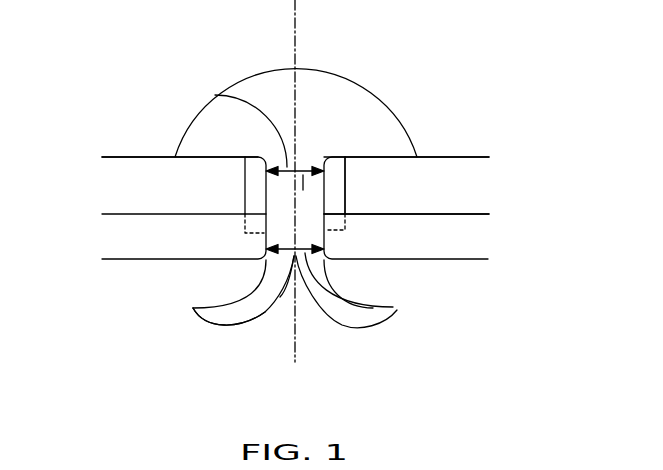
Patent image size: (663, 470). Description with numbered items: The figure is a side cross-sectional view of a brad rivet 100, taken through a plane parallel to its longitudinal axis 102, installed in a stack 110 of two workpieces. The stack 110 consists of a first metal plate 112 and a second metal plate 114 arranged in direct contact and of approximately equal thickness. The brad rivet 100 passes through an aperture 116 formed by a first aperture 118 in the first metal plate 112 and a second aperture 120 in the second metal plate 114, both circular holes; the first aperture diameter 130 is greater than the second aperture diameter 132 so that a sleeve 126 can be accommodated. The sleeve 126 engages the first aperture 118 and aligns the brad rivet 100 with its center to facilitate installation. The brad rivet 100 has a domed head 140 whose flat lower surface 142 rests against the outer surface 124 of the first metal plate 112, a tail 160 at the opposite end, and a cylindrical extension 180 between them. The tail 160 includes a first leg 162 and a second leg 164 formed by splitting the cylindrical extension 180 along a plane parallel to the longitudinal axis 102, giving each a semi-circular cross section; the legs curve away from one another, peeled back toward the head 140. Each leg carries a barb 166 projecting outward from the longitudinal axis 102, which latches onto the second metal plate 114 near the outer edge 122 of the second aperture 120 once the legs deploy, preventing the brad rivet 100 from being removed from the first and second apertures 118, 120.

The brad rivet 100 is at (125, 42).
The longitudinal axis 102 is at (294, 42).
The stack 110 is at (88, 212).
The first metal plate 112 is at (477, 173).
The second metal plate 114 is at (477, 243).
The aperture 116 is at (263, 195).
The first aperture 118 is at (347, 177).
The second aperture 120 is at (327, 242).
The outer edge 122 is at (263, 263).
The outer surface 124 is at (460, 157).
The sleeve 126 is at (333, 185).
The first aperture diameter 130 is at (215, 93).
The second aperture diameter 132 is at (342, 326).
The head 140 is at (250, 70).
The flat lower surface 142 is at (205, 160).
The tail 160 is at (237, 357).
The first leg 162 is at (222, 322).
The second leg 164 is at (380, 316).
The barb 166 is at (393, 307).
The cylindrical extension 180 is at (303, 188).